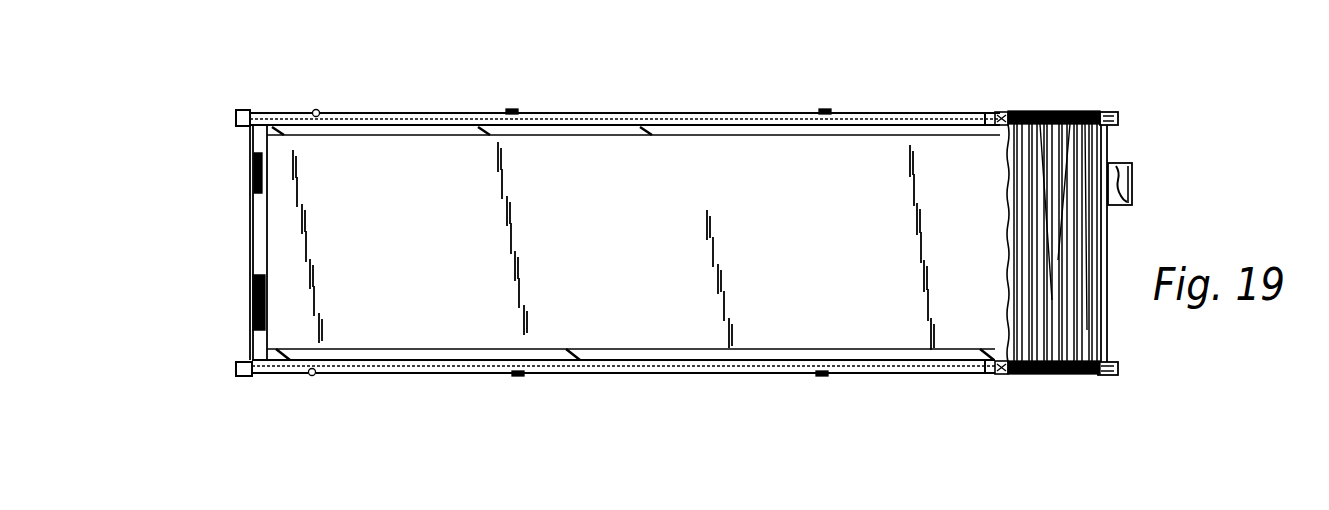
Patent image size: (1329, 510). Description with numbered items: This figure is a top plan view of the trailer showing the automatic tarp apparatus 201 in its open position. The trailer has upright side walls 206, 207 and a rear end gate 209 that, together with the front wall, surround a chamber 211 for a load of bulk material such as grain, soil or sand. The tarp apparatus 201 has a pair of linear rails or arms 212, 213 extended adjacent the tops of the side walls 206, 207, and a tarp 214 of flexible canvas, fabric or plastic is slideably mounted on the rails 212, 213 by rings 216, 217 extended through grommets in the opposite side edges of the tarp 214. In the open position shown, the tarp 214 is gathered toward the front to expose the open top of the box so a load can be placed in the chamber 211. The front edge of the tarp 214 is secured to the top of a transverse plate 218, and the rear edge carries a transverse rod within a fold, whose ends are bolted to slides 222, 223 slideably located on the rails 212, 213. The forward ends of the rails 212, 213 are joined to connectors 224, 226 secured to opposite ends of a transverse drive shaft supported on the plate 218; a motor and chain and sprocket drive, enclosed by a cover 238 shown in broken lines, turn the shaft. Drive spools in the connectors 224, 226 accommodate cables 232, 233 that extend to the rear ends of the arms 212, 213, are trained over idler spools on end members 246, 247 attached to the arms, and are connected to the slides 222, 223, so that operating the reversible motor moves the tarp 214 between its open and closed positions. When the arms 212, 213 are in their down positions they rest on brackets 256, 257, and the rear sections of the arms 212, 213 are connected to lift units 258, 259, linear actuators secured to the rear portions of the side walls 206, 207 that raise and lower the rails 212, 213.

The automatic tarp apparatus 201 is at (1072, 101).
The side wall 206 is at (641, 135).
The side wall 207 is at (672, 349).
The rear end gate 209 is at (250, 232).
The chamber 211 is at (655, 236).
The rail 212 is at (668, 112).
The rail 213 is at (710, 373).
The tarp 214 is at (1090, 374).
The ring 216 is at (1047, 111).
The ring 217 is at (1065, 374).
The transverse plate 218 is at (1108, 233).
The slide 222 is at (1003, 112).
The slide 223 is at (1000, 374).
The connector 224 is at (1118, 368).
The connector 226 is at (1116, 111).
The cable 232 is at (990, 112).
The cable 233 is at (985, 358).
The cover 238 is at (1130, 165).
The end member 246 is at (245, 110).
The end member 247 is at (240, 375).
The bracket 256 is at (512, 110).
The bracket 257 is at (518, 376).
The lift unit 258 is at (312, 375).
The lift unit 259 is at (318, 110).